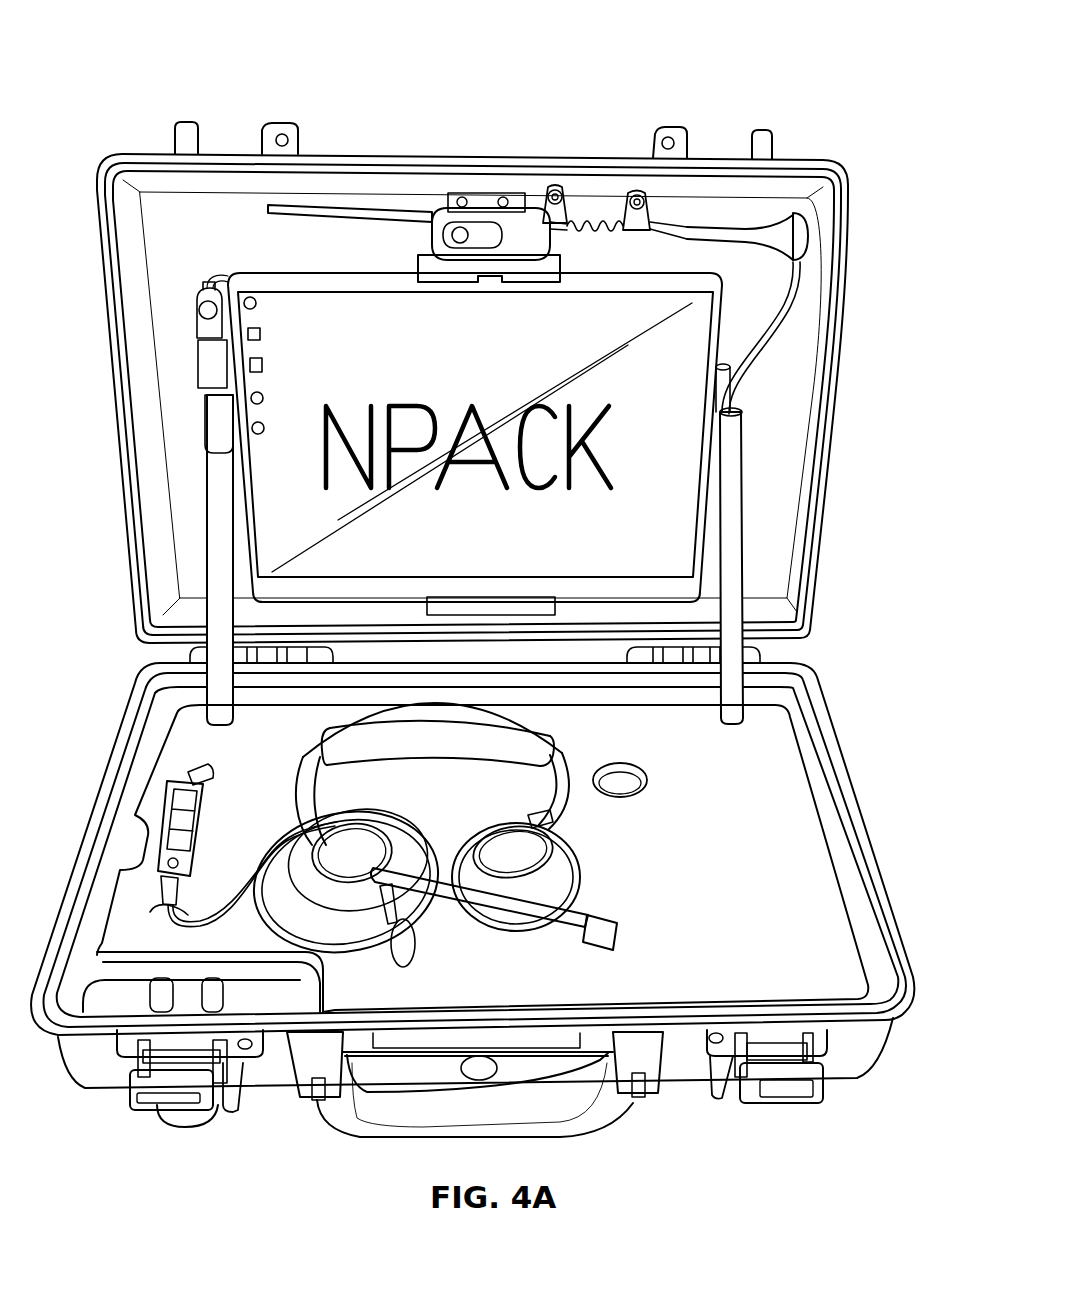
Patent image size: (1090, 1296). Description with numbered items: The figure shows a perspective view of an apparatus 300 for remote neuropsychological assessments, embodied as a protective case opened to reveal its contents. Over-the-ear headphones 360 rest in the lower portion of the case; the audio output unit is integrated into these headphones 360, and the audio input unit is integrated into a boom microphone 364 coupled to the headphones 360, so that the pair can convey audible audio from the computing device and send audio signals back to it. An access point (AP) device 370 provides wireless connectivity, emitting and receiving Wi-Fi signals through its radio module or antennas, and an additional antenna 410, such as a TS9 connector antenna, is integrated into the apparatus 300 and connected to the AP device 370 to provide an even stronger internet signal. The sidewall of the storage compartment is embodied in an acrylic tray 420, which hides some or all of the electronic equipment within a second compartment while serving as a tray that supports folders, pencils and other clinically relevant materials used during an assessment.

The apparatus 300 is at (657, 97).
The additional antenna 410 is at (356, 208).
The over-the-ear headphones 360 is at (574, 752).
The boom microphone 364 is at (605, 920).
The acrylic tray 420 is at (773, 912).
The access point (AP) device 370 is at (310, 978).